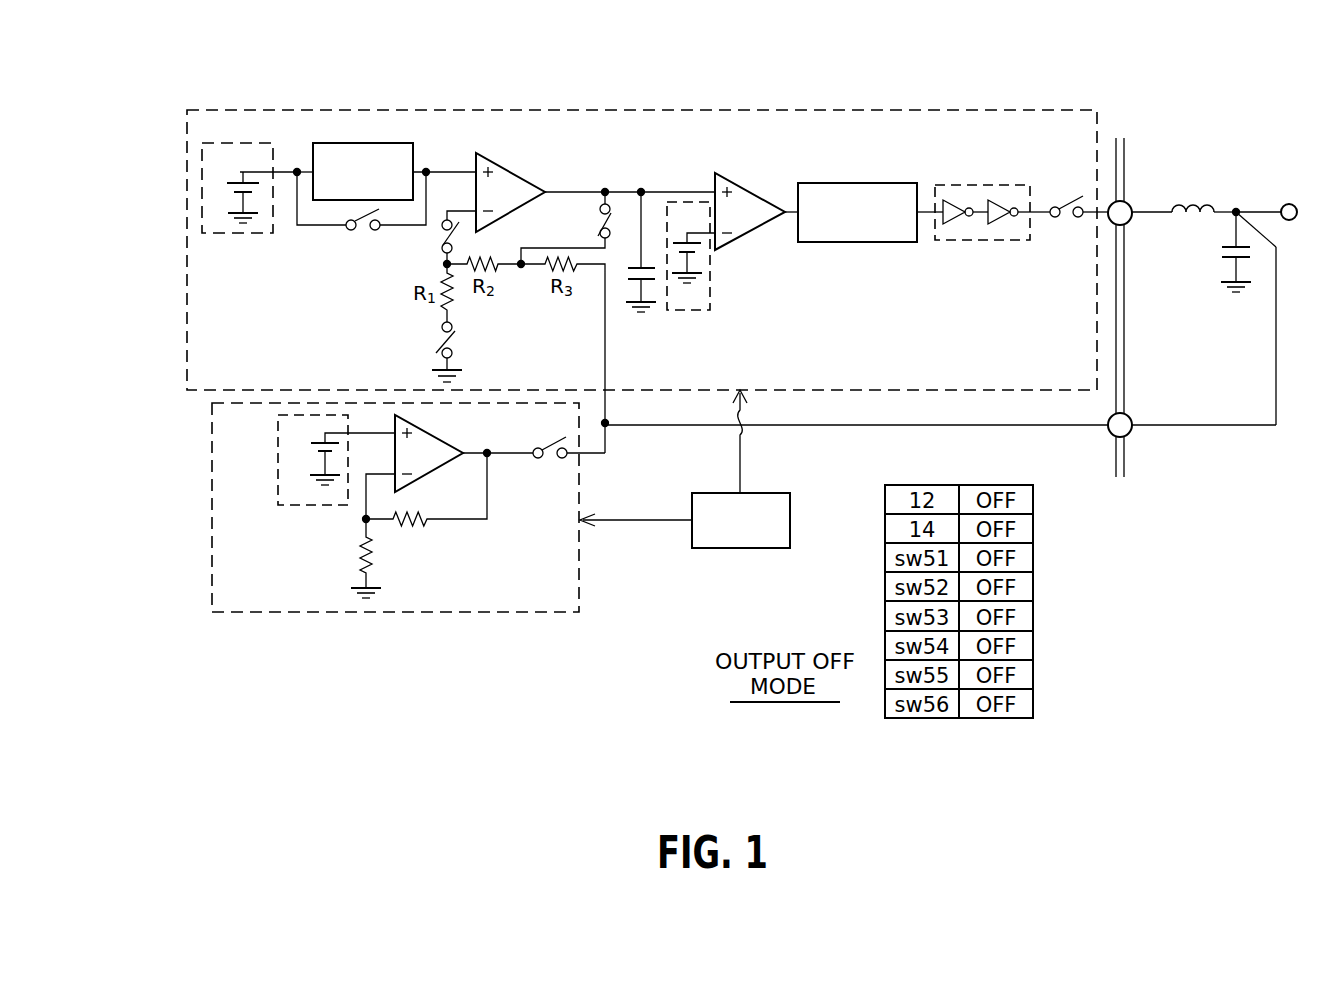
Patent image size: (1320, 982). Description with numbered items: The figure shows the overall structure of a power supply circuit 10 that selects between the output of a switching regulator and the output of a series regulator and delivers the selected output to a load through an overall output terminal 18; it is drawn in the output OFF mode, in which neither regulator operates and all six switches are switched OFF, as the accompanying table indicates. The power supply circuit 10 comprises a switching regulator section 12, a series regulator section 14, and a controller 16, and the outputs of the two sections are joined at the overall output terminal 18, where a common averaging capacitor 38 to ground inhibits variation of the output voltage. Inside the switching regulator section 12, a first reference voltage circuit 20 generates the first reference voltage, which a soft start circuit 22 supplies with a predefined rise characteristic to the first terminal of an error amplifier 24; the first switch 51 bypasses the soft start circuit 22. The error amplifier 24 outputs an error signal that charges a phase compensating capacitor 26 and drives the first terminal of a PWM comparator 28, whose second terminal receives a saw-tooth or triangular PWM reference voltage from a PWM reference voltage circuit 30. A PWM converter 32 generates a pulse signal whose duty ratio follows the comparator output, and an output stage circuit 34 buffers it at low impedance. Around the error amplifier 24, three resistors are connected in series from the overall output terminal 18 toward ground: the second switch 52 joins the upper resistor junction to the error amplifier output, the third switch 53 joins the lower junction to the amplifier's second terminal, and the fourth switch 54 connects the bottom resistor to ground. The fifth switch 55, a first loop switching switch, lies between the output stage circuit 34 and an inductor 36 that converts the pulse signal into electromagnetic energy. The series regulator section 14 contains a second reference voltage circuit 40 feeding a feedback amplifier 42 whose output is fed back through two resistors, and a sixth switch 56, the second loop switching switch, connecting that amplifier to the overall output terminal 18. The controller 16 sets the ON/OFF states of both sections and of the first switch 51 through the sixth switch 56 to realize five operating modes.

The power supply circuit 10 is at (1166, 524).
The switching regulator section 12 is at (612, 110).
The series regulator section 14 is at (440, 612).
The controller 16 is at (740, 548).
The overall output terminal 18 is at (1289, 203).
The first reference voltage circuit 20 is at (240, 143).
The soft start circuit 22 is at (368, 143).
The error amplifier 24 is at (512, 172).
The phase compensating capacitor 26 is at (622, 284).
The PWM comparator 28 is at (750, 190).
The PWM reference voltage circuit 30 is at (710, 291).
The PWM converter 32 is at (850, 183).
The output stage circuit 34 is at (983, 185).
The inductor 36 is at (1192, 197).
The capacitor 38 is at (1214, 254).
The second reference voltage circuit 40 is at (278, 470).
The feedback amplifier 42 is at (430, 430).
The first switch 51 is at (360, 240).
The second switch 52 is at (593, 218).
The third switch 53 is at (432, 240).
The fourth switch 54 is at (430, 346).
The fifth switch 55 is at (1066, 224).
The sixth switch 56 is at (550, 470).